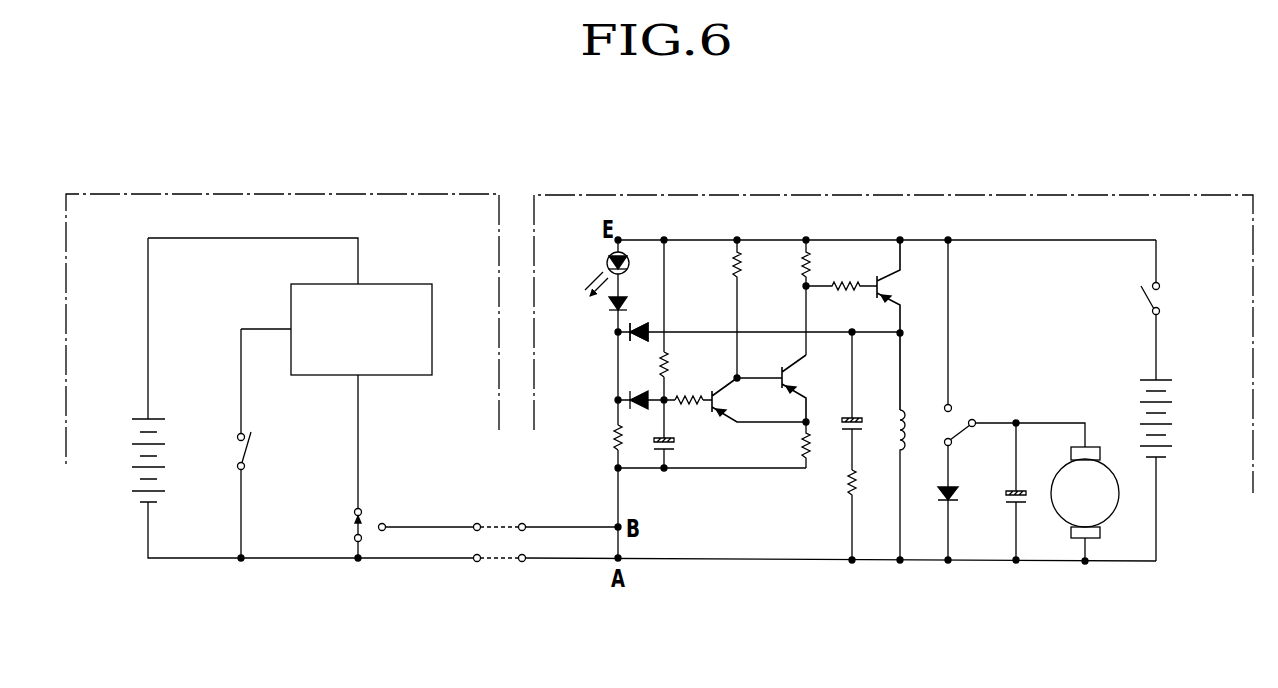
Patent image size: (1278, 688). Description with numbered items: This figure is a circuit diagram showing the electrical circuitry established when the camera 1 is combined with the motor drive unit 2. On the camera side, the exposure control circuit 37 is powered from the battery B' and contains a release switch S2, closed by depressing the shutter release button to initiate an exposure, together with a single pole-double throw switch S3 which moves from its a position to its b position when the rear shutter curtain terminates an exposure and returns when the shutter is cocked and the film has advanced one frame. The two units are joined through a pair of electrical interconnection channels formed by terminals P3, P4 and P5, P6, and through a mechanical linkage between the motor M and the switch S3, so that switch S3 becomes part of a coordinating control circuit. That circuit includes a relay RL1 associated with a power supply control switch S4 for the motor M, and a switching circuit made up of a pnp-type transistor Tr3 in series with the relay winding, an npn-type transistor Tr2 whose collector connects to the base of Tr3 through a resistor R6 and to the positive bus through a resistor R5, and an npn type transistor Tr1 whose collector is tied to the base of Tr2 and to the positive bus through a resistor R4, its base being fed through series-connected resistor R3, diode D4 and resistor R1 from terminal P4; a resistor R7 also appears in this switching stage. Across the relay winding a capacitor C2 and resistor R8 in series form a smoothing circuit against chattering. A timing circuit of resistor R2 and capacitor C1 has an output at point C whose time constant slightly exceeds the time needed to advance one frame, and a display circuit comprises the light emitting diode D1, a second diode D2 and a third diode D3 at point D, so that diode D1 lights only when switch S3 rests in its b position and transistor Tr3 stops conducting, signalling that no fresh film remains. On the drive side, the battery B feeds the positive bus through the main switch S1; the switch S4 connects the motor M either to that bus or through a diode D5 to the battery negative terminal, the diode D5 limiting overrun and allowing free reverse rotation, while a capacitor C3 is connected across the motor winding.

The camera 1 is at (210, 202).
The motor drive unit 2 is at (893, 205).
The exposure control circuit 37 is at (392, 300).
The battery B' is at (160, 460).
The release switch S2 is at (256, 443).
The single pole-double throw switch S3 is at (378, 512).
The interconnection terminal P3 is at (436, 512).
The interconnection terminal P4 is at (549, 512).
The interconnection terminal P5 is at (477, 578).
The interconnection terminal P6 is at (522, 578).
The light emitting diode D1 is at (617, 273).
The second diode D2 is at (629, 306).
The point D is at (612, 335).
The third diode D3 is at (640, 347).
The diode D4 is at (640, 415).
The resistor R1 is at (607, 440).
The resistor R2 is at (677, 320).
The resistor R3 is at (697, 379).
The capacitor C1 is at (675, 434).
The point C is at (668, 404).
The resistor R4 is at (749, 309).
The resistor R5 is at (793, 297).
The resistor R6 is at (841, 273).
The npn type transistor Tr1 is at (759, 400).
The npn-type transistor Tr2 is at (803, 388).
The pnp-type transistor Tr3 is at (899, 325).
The resistor R7 is at (794, 445).
The capacitor C2 is at (863, 401).
The resistor R8 is at (865, 513).
The relay RL1 is at (918, 485).
The power supply control switch S4 is at (976, 393).
The diode D5 is at (957, 522).
The capacitor C3 is at (1008, 491).
The motor M is at (1085, 504).
The main switch S1 is at (1163, 310).
The battery B is at (1166, 470).